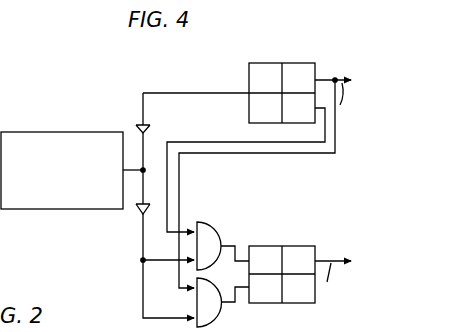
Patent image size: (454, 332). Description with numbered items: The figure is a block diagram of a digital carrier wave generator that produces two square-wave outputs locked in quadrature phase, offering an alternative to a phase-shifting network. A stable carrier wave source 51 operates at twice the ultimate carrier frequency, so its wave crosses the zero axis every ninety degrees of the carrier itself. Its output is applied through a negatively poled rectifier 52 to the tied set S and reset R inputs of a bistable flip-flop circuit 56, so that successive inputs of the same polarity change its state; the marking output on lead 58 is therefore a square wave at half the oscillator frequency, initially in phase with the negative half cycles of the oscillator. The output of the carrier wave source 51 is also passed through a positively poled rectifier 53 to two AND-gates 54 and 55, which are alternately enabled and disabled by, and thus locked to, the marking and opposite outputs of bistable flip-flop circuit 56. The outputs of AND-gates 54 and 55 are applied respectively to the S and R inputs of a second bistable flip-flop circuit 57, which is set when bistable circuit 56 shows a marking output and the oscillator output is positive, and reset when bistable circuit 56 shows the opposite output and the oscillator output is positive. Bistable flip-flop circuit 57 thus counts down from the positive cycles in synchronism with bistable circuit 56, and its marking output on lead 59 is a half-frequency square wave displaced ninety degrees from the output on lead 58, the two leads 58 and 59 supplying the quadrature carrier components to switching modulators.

The carrier wave source 51 is at (95, 131).
The negatively poled rectifier 52 is at (149, 129).
The positively poled rectifier 53 is at (137, 217).
The AND-gate 54 is at (212, 227).
The AND-gate 55 is at (217, 317).
The bistable flip-flop circuit 56 is at (280, 63).
The bistable flip-flop circuit 57 is at (281, 246).
The lead 58 is at (335, 78).
The lead 59 is at (326, 259).